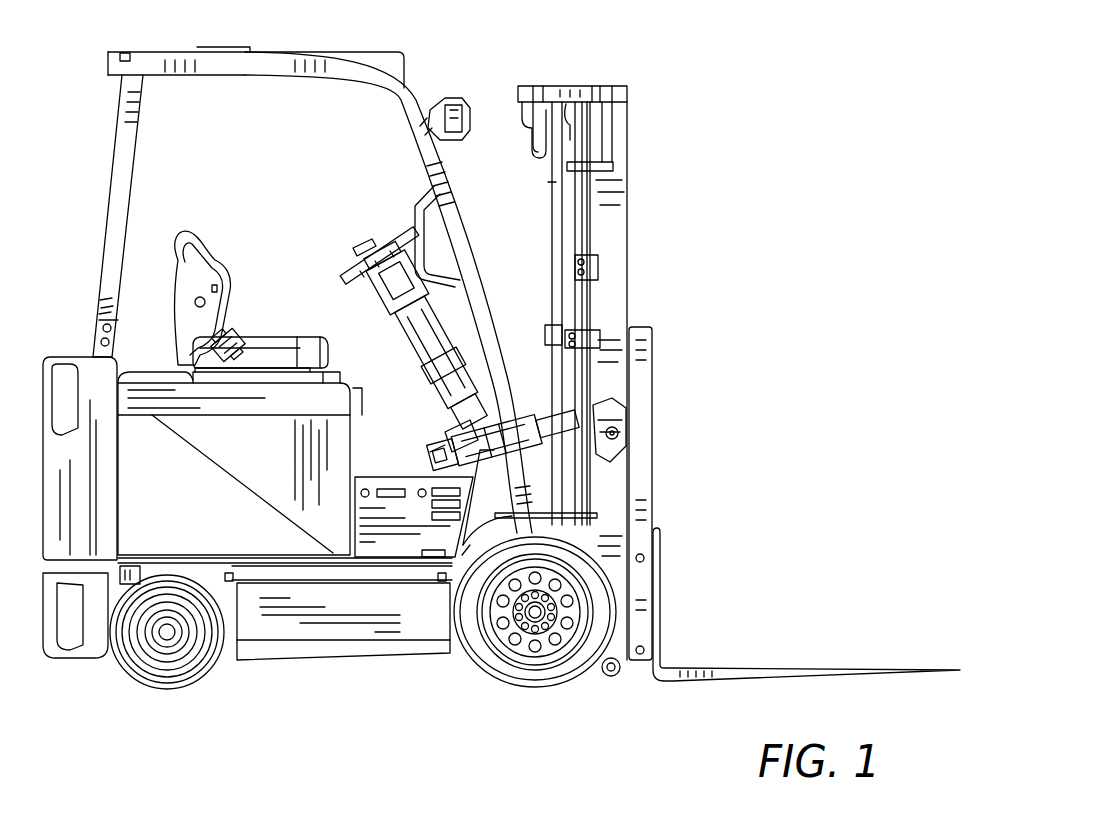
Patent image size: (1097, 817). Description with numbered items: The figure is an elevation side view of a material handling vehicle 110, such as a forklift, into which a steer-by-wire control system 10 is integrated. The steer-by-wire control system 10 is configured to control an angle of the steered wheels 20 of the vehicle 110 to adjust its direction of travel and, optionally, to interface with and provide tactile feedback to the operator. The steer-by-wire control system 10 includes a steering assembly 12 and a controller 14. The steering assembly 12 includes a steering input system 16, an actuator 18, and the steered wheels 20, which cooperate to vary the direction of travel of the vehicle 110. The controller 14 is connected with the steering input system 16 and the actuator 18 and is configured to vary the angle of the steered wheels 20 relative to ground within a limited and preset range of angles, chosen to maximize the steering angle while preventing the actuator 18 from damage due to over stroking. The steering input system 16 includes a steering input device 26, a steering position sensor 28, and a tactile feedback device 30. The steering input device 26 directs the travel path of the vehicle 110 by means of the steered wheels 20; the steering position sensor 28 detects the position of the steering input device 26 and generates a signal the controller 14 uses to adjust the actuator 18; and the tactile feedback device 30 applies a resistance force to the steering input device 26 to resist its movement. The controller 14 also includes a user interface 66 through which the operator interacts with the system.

The steer-by-wire control system 10 is at (395, 715).
The steering assembly 12 is at (408, 668).
The controller 14 is at (385, 532).
The steering input system 16 is at (422, 250).
The actuator 18 is at (163, 600).
The steered wheels 20 is at (202, 670).
The steering input device 26 is at (400, 233).
The steering position sensor 28 is at (383, 300).
The tactile feedback device 30 is at (400, 320).
The user interface 66 is at (383, 287).
The material handling vehicle 110 is at (485, 70).